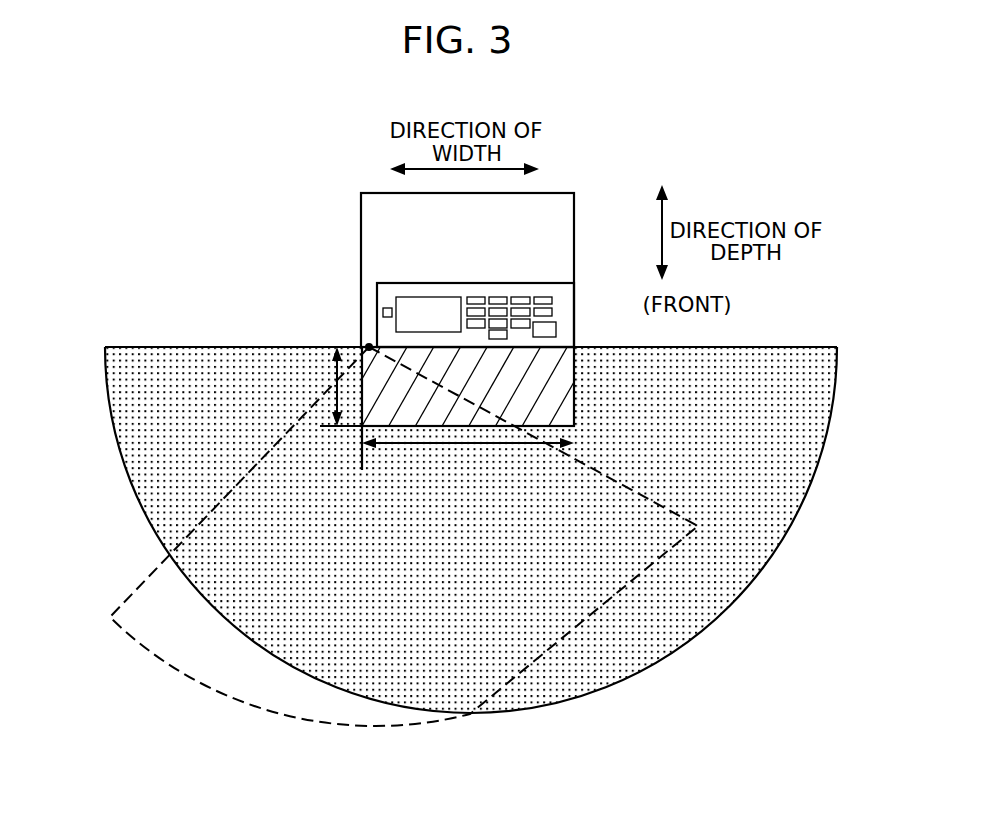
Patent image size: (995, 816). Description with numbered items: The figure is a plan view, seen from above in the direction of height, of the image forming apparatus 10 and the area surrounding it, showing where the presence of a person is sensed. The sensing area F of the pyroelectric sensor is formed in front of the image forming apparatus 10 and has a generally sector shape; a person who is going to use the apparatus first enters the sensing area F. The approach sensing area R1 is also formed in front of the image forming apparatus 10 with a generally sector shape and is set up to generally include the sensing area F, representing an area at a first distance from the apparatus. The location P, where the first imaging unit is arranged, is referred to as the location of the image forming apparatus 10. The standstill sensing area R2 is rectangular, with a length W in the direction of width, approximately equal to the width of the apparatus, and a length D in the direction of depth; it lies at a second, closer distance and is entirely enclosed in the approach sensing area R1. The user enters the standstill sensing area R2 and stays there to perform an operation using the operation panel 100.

The image forming apparatus 10 is at (575, 235).
The operation panel 100 is at (567, 317).
The location of the image forming apparatus P is at (367, 345).
The approach sensing area R1 is at (630, 679).
The standstill sensing area R2 is at (558, 384).
The sensing area F is at (263, 708).
The length in the direction of depth D is at (329, 386).
The length in the direction of width W is at (468, 444).